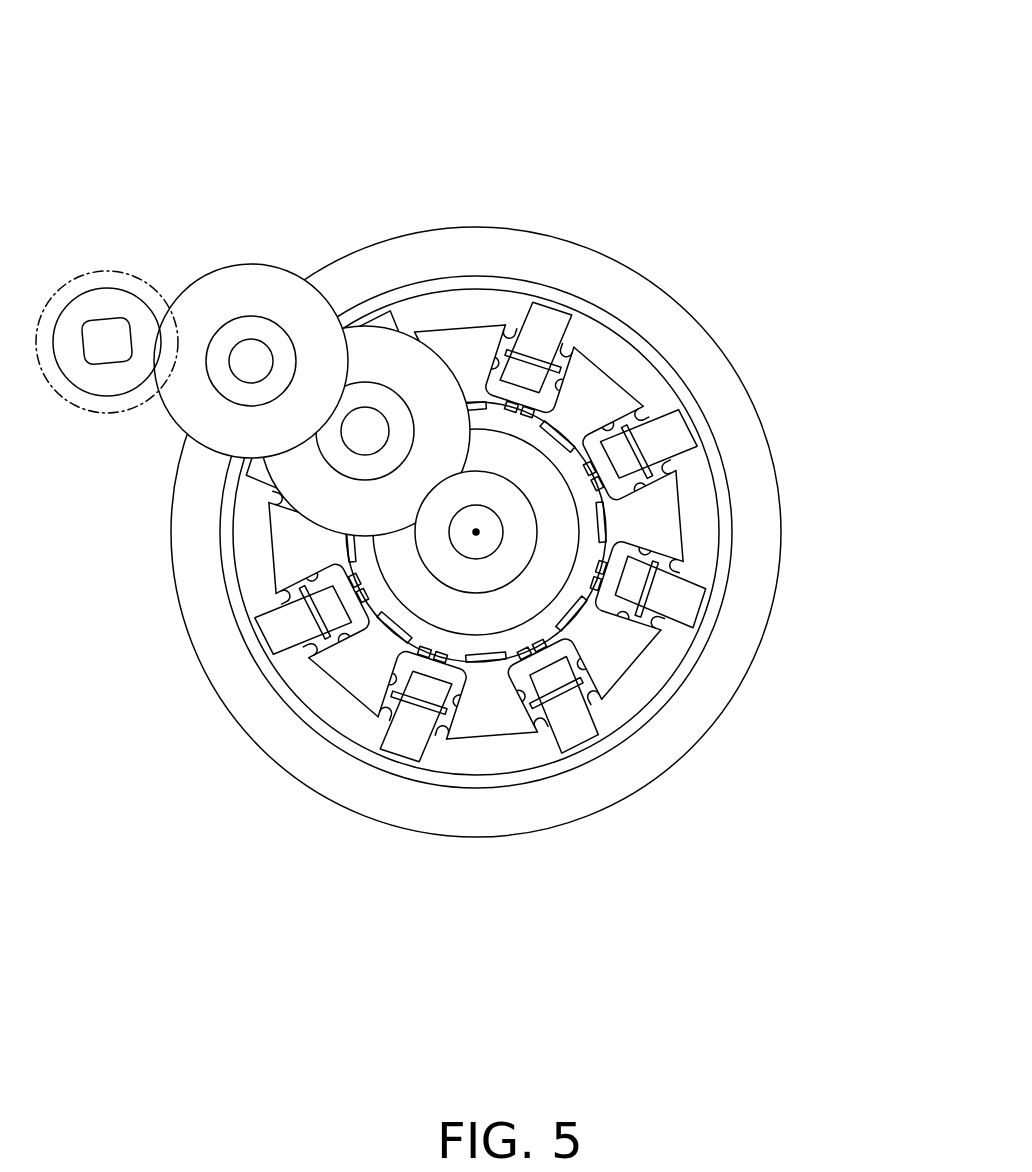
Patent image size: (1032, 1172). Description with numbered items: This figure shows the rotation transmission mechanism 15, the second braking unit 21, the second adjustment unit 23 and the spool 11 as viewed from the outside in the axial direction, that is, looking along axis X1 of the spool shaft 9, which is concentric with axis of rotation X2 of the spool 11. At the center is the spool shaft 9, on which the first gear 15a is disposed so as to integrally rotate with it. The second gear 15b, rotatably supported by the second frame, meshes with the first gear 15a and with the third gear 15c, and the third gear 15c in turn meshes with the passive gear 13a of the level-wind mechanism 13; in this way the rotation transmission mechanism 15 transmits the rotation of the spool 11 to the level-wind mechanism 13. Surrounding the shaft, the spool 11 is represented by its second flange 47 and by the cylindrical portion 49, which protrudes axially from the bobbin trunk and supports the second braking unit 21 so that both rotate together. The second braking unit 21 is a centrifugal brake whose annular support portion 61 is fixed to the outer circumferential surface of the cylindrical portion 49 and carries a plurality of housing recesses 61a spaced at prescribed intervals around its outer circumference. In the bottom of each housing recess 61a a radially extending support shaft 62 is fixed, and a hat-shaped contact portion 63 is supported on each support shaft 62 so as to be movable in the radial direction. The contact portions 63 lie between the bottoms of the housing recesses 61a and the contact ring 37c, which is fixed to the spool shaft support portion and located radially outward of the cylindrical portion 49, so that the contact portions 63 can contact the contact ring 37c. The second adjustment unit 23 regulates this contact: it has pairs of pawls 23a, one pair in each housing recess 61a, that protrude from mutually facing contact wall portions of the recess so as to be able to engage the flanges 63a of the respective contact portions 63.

The spool shaft 9 is at (474, 743).
The spool 11 is at (513, 209).
The level-wind mechanism 13 is at (105, 283).
The passive gear 13a is at (117, 310).
The rotation transmission mechanism 15 is at (319, 492).
The first gear 15a is at (474, 549).
The second gear 15b is at (387, 360).
The third gear 15c is at (260, 297).
The second braking unit 21 is at (469, 472).
The second adjustment unit 23 is at (745, 372).
The pawls 23a is at (745, 372).
The contact ring 37c is at (230, 493).
The second flange 47 is at (550, 257).
The cylindrical portion 49 is at (562, 608).
The support portion 61 is at (315, 681).
The housing recesses 61a is at (657, 399).
The support shafts 62 is at (305, 570).
The contact portions 63 is at (280, 628).
The flanges 63a is at (643, 417).
The axis X1 is at (496, 733).
The axis of rotation X2 is at (476, 532).